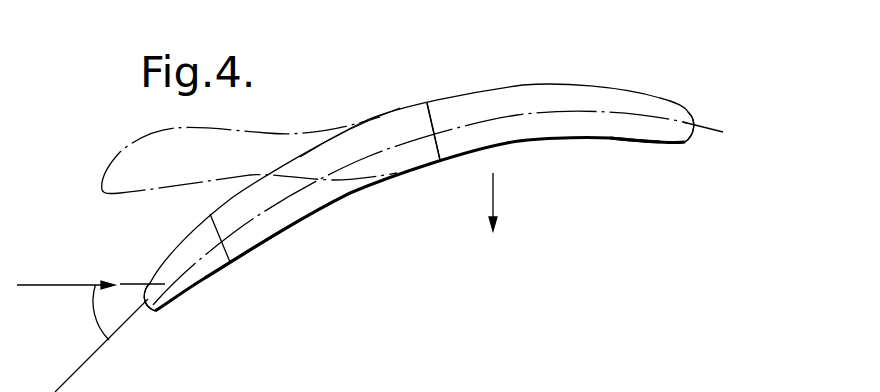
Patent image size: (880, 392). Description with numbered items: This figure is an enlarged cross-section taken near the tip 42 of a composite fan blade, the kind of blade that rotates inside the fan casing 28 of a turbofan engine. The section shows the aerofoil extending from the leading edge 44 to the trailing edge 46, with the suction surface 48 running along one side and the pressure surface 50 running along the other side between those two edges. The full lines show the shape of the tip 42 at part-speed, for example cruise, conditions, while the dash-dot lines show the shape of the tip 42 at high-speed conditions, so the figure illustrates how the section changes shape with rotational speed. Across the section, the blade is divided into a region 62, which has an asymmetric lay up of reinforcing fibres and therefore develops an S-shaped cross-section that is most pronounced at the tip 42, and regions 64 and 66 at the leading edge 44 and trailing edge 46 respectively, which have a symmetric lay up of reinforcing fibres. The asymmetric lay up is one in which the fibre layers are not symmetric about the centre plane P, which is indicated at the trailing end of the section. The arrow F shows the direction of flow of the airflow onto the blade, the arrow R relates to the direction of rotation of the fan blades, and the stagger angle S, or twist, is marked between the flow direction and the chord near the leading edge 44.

The fan casing 28 is at (437, 102).
The tip 42 is at (525, 83).
The leading edge 44 is at (153, 314).
The trailing edge 46 is at (694, 138).
The suction surface 48 is at (382, 117).
The pressure surface 50 is at (440, 162).
The region 62 is at (314, 198).
The region at the leading edge 64 is at (197, 267).
The region at the trailing edge 66 is at (602, 125).
The centre plane P is at (704, 125).
The direction of flow F is at (91, 274).
The stagger angle S is at (108, 323).
The radial direction R is at (494, 218).